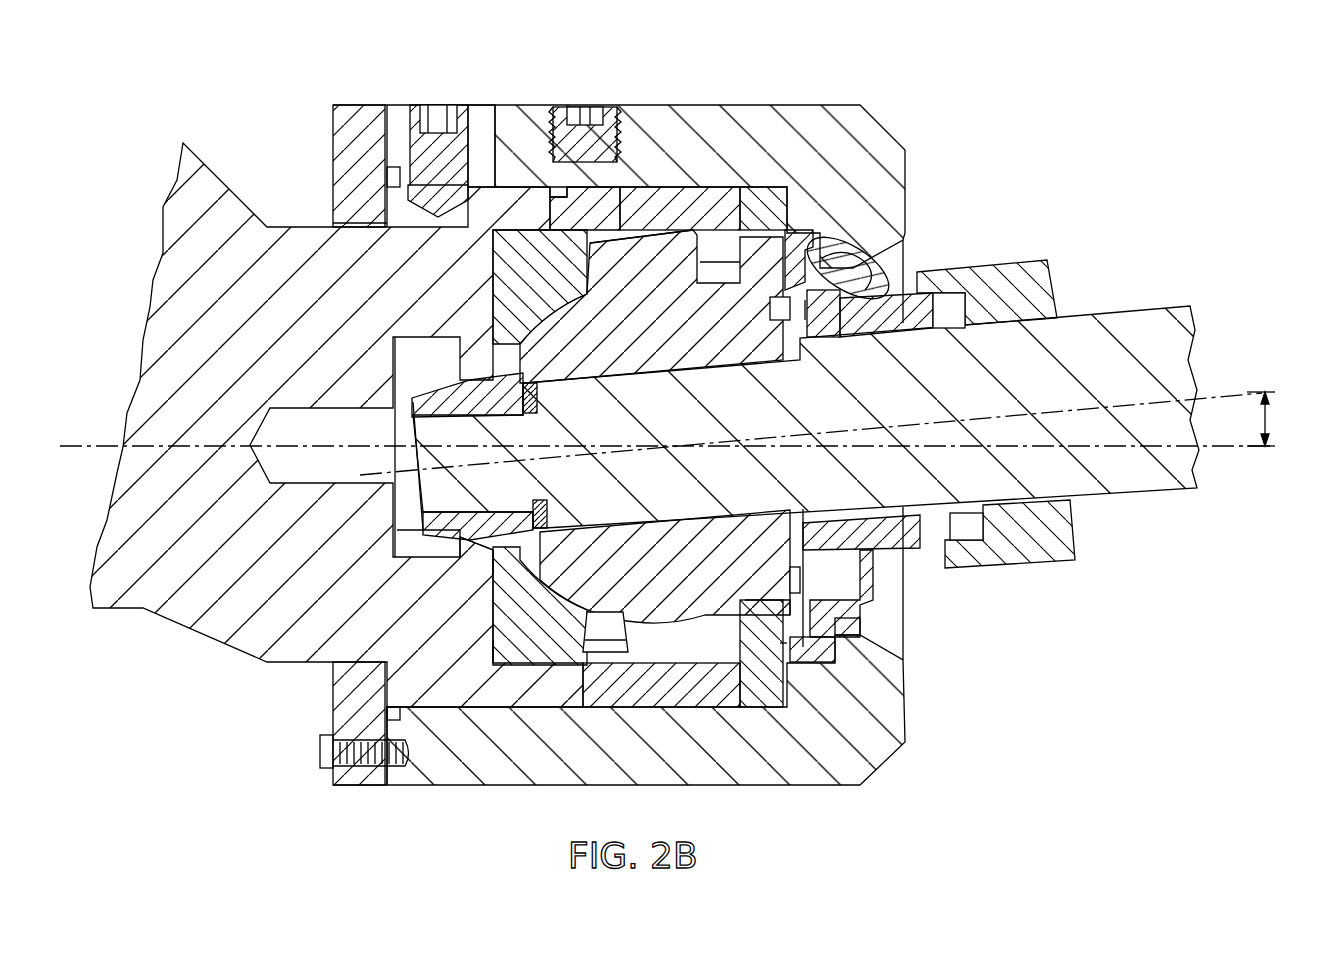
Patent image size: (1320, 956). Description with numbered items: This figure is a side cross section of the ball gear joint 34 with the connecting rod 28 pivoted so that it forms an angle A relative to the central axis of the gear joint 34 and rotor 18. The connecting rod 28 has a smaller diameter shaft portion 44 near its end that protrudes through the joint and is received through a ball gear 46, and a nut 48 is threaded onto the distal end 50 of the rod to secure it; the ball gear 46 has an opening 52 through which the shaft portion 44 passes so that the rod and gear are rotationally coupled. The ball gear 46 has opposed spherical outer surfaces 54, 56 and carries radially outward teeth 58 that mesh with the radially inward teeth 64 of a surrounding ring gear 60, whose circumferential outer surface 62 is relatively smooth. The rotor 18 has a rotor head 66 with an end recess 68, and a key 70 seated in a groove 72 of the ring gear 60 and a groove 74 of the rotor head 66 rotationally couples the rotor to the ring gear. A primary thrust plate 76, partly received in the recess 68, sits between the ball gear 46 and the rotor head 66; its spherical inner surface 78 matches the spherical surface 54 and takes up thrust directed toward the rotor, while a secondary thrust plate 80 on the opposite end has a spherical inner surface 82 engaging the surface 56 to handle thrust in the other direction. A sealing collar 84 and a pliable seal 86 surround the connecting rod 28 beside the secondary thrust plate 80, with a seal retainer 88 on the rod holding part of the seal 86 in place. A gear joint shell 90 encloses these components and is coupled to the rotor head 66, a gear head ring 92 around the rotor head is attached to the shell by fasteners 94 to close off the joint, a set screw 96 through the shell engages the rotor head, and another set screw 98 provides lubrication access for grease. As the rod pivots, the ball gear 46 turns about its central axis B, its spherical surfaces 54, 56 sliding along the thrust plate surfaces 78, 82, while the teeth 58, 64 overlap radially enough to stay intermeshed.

The rotor 18 is at (108, 545).
The connecting rod 28 is at (1158, 318).
The ball gear joint 34 is at (756, 86).
The shaft portion 44 is at (710, 378).
The ball gear 46 is at (738, 296).
The nut 48 is at (415, 533).
The distal/protruding end 50 is at (415, 488).
The opening 52 is at (668, 520).
The spherical outer surface 54 is at (556, 300).
The spherical outer surface 56 is at (820, 245).
The teeth 58 is at (686, 237).
The ring gear 60 is at (720, 187).
The circumferential outer surface 62 is at (672, 187).
The teeth 64 is at (785, 232).
The rotor head 66 is at (495, 195).
The recess 68 is at (500, 648).
The key 70 is at (587, 113).
The groove 72 is at (615, 205).
The groove 74 is at (565, 193).
The primary thrust plate 76 is at (495, 592).
The axially inner surface 78 is at (548, 565).
The secondary thrust plate 80 is at (760, 705).
The spherical inner surface 82 is at (782, 592).
The sealing collar 84 is at (885, 270).
The pliable seal 86 is at (920, 337).
The seal retainer 88 is at (1055, 295).
The gear joint shell 90 is at (687, 108).
The gear head ring 92 is at (340, 152).
The fastener 94 is at (320, 752).
The set screw 96 is at (425, 157).
The set screw 98 is at (585, 130).
The angle A is at (1268, 418).
The central axis B is at (665, 445).